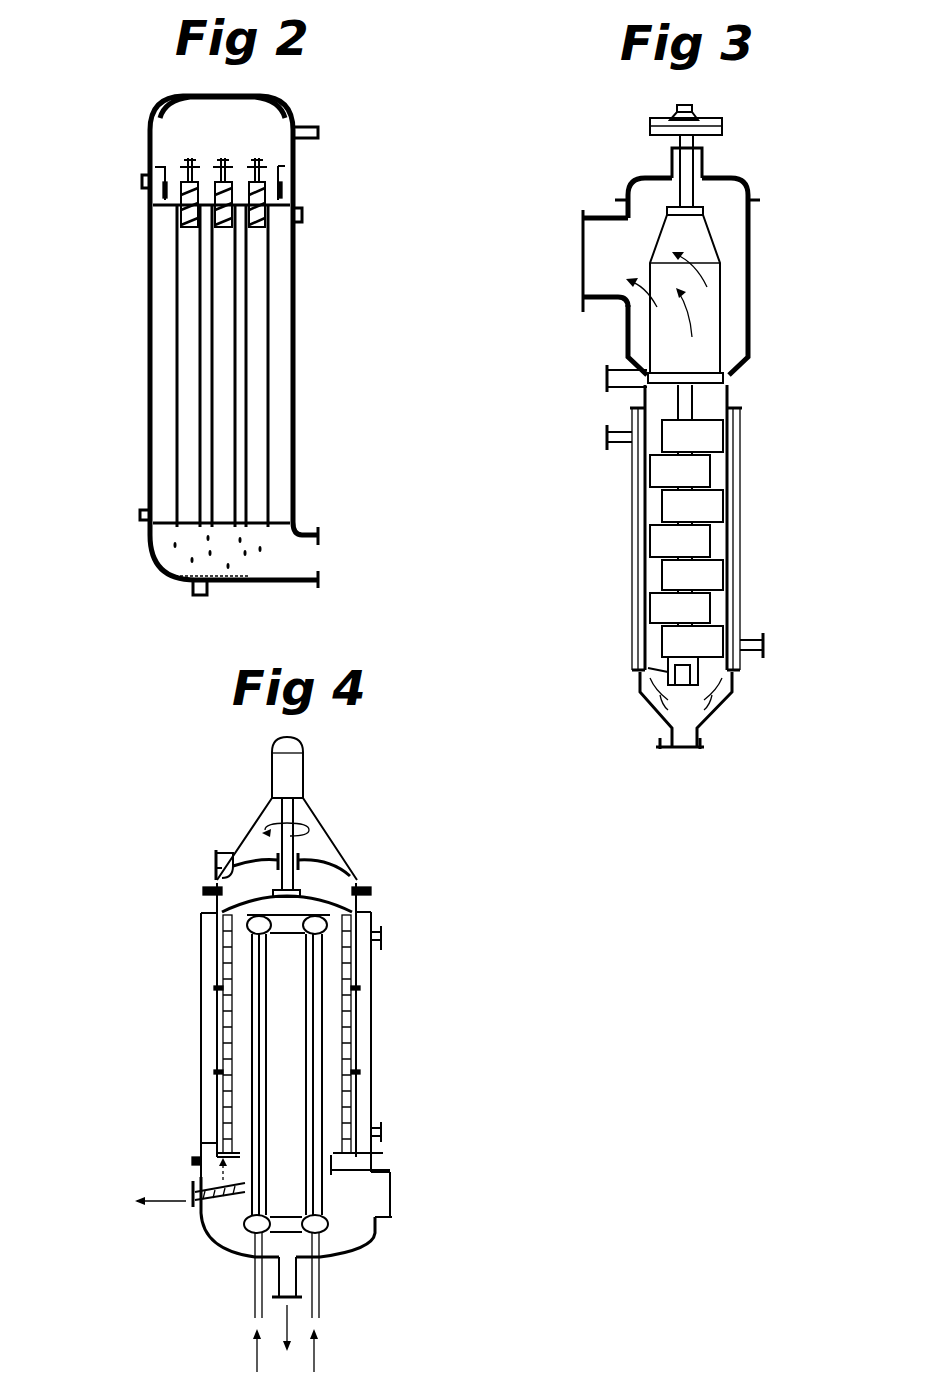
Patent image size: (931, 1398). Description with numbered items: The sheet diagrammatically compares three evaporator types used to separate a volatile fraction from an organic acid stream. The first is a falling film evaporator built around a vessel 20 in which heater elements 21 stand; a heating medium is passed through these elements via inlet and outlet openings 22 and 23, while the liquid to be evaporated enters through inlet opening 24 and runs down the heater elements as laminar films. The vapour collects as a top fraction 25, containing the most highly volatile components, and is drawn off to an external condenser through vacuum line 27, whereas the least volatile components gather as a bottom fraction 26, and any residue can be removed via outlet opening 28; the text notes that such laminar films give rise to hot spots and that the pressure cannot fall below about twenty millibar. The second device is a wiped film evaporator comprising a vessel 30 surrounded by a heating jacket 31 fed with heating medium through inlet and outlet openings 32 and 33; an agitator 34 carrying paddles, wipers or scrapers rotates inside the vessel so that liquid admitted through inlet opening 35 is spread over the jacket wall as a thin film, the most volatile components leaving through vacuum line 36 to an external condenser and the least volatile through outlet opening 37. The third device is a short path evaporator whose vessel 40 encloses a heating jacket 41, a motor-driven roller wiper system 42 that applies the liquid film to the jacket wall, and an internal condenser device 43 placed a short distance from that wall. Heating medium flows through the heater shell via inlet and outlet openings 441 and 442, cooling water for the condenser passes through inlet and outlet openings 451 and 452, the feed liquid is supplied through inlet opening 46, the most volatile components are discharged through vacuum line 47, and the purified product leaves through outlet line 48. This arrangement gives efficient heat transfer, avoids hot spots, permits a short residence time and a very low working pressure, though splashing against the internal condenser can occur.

In FIG. 2, the vessel 20 is at (296, 323).
In FIG. 2, the heater elements 21 is at (277, 373).
In FIG. 2, the inlet opening 22 is at (305, 216).
In FIG. 2, the outlet opening 23 is at (135, 515).
In FIG. 2, the inlet opening 24 is at (138, 181).
In FIG. 2, the top fraction 25 is at (173, 122).
In FIG. 2, the bottom fraction 26 is at (308, 556).
In FIG. 2, the vacuum line 27 is at (306, 125).
In FIG. 2, the outlet opening 28 is at (198, 600).
In FIG. 3, the vessel 30 is at (743, 470).
In FIG. 3, the heating jacket 31 is at (735, 520).
In FIG. 3, the inlet opening 32 is at (598, 437).
In FIG. 3, the outlet opening 33 is at (811, 647).
In FIG. 3, the agitator 34 is at (710, 348).
In FIG. 3, the inlet opening 35 is at (598, 378).
In FIG. 3, the vacuum line 36 is at (590, 264).
In FIG. 3, the outlet opening 37 is at (683, 750).
In FIG. 4, the vessel 40 is at (213, 1233).
In FIG. 4, the heating jacket 41 is at (212, 1068).
In FIG. 4, the roller wiper system 42 is at (228, 1012).
In FIG. 4, the internal condenser device 43 is at (283, 965).
In FIG. 4, the inlet opening 441 is at (445, 1133).
In FIG. 4, the outlet opening 442 is at (443, 936).
In FIG. 4, the inlet opening 46 is at (198, 864).
In FIG. 4, the vacuum line 47 is at (395, 1195).
In FIG. 4, the outlet line 48 is at (290, 1291).
In FIG. 4, the inlet opening 451 is at (256, 1360).
In FIG. 4, the outlet opening 452 is at (318, 1343).